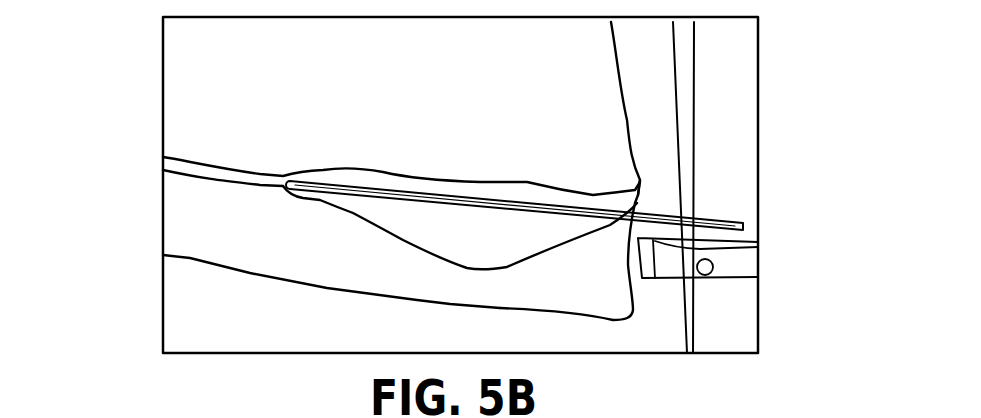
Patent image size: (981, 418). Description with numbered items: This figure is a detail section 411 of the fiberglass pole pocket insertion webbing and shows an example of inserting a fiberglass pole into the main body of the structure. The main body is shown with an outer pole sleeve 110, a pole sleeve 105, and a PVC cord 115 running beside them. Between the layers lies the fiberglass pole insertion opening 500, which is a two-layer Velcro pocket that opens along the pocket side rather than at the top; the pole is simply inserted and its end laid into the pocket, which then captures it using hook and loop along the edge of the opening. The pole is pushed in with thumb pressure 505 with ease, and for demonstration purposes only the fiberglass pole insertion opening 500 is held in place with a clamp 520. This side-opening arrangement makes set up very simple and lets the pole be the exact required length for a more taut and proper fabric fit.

The outer pole sleeve 110 is at (200, 85).
The pole sleeve 105 is at (190, 245).
The fiberglass pole insertion opening 500 is at (476, 218).
The thumb pressure 505 is at (333, 183).
The detail section 411 is at (753, 80).
The PVC cord 115 is at (652, 142).
The clamp 520 is at (730, 258).